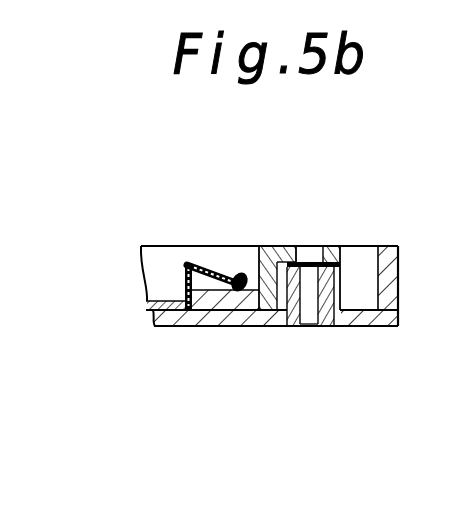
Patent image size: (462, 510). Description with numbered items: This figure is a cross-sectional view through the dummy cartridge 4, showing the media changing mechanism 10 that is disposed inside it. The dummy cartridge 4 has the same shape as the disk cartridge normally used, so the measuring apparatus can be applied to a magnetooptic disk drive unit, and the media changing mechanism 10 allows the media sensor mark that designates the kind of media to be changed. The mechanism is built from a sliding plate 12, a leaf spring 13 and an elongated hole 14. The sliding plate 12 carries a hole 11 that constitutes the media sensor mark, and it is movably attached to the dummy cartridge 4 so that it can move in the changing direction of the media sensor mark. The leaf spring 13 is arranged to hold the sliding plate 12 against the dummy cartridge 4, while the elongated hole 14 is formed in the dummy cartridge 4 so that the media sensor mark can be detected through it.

The media changing mechanism 10 is at (176, 234).
The dummy cartridge 4 is at (398, 273).
The hole 11 is at (310, 266).
The sliding plate 12 is at (272, 250).
The leaf spring 13 is at (207, 262).
The elongated hole 14 is at (322, 306).